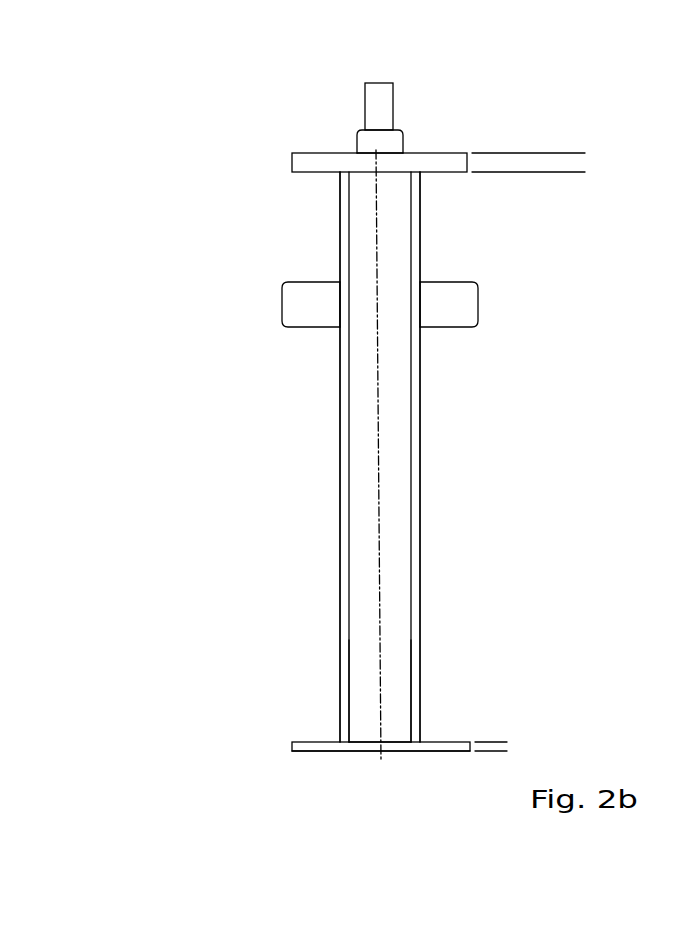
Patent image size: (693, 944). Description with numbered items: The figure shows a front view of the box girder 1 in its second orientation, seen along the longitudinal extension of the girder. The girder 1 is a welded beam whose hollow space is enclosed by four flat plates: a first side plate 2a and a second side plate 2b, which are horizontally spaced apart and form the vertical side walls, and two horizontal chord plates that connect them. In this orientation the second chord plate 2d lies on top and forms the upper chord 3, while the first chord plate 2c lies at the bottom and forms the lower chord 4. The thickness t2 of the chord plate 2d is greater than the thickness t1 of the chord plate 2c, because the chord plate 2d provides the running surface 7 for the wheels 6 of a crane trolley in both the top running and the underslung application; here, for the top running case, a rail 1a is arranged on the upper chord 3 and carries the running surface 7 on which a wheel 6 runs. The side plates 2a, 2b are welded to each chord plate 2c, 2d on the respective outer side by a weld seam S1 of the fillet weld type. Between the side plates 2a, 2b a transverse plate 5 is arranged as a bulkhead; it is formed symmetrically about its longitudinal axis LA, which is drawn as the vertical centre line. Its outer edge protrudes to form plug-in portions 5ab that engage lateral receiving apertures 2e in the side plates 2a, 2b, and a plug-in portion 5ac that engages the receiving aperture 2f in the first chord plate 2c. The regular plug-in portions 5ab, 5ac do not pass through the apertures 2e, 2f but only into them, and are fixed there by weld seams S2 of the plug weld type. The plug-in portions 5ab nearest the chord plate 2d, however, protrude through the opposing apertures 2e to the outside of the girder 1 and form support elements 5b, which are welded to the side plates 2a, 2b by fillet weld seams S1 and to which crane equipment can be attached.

The box girder 1 is at (203, 355).
The rail 1a is at (377, 147).
The first side plate 2a is at (418, 488).
The second side plate 2b is at (342, 490).
The first chord plate 2c is at (311, 760).
The second chord plate 2d is at (323, 153).
The lateral receiving aperture 2e is at (333, 305).
The receiving aperture 2f is at (417, 763).
The upper chord 3 is at (305, 160).
The lower chord 4 is at (325, 748).
The transverse plate 5 is at (390, 430).
The plug-in portion 5ab is at (406, 491).
The plug-in portion 5ac is at (368, 755).
The support element 5b is at (310, 305).
The wheel 6 is at (383, 105).
The running surface 7 is at (370, 125).
The weld seam of the fillet weld type S1 is at (330, 178).
The weld seam of the plug weld type S2 is at (337, 708).
The longitudinal axis LA is at (380, 368).
The thickness of the chord plate 2c t1 is at (500, 712).
The thickness of the chord plate 2d t2 is at (580, 123).